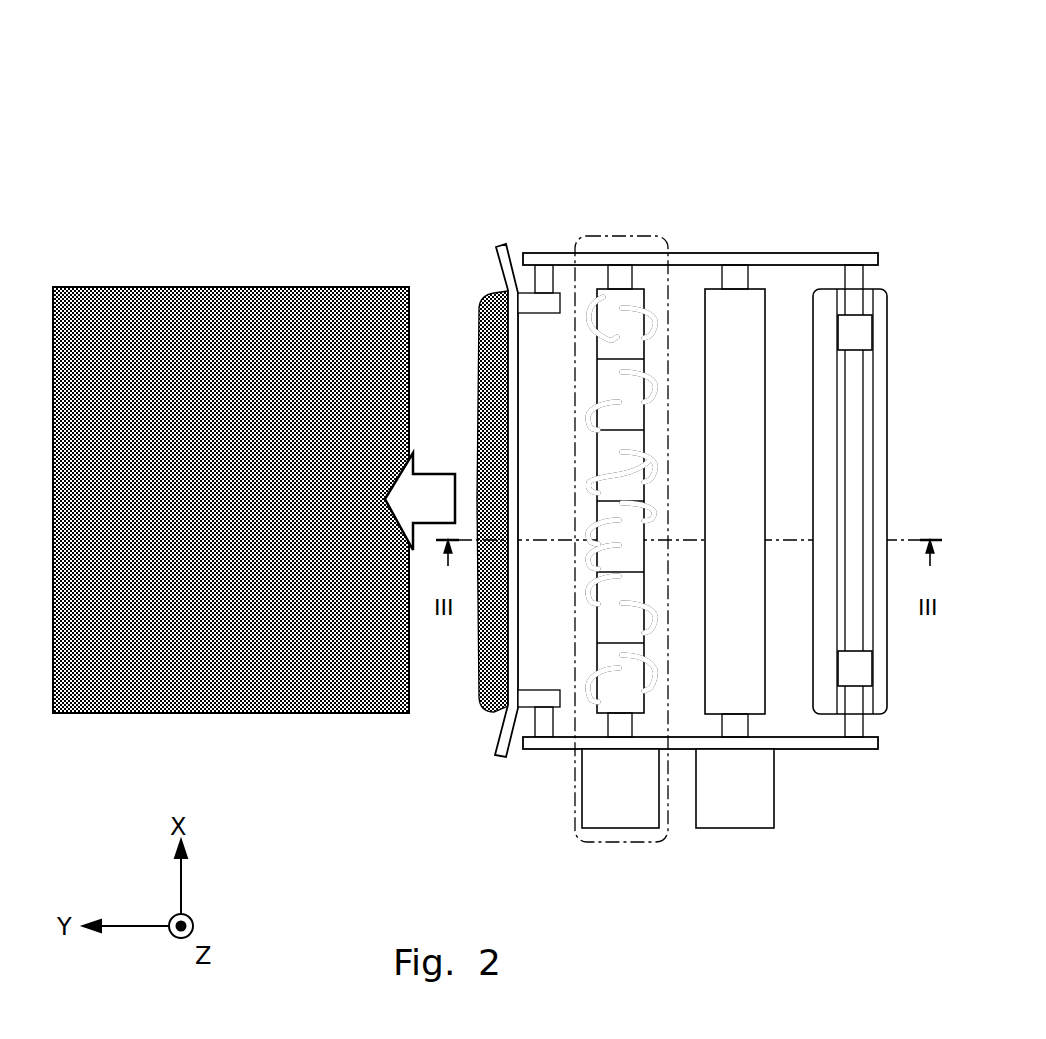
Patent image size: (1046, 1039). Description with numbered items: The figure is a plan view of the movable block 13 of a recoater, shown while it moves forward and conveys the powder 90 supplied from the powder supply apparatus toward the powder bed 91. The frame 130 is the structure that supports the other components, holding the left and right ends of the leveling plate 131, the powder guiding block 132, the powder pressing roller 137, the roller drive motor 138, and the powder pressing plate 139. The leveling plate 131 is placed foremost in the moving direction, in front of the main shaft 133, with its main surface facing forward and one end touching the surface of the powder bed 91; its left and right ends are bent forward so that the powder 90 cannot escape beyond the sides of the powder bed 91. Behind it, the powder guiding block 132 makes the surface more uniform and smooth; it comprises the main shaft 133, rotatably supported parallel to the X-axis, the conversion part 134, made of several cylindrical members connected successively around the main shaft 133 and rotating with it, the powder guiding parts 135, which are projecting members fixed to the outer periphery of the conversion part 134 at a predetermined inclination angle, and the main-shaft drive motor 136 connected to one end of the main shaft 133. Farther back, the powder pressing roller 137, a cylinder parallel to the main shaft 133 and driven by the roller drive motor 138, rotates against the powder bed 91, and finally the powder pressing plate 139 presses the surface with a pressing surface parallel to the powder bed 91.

The movable block 13 is at (572, 78).
The powder 90 is at (481, 294).
The powder bed 91 is at (203, 287).
The frame 130 is at (840, 253).
The leveling plate 131 is at (500, 245).
The powder guiding block 132 is at (637, 236).
The main shaft 133 is at (607, 278).
The conversion part 134 is at (649, 289).
The powder guiding parts 135 is at (595, 319).
The main-shaft drive motor 136 is at (632, 829).
The powder pressing roller 137 is at (713, 289).
The roller drive motor 138 is at (760, 829).
The powder pressing plate 139 is at (826, 289).